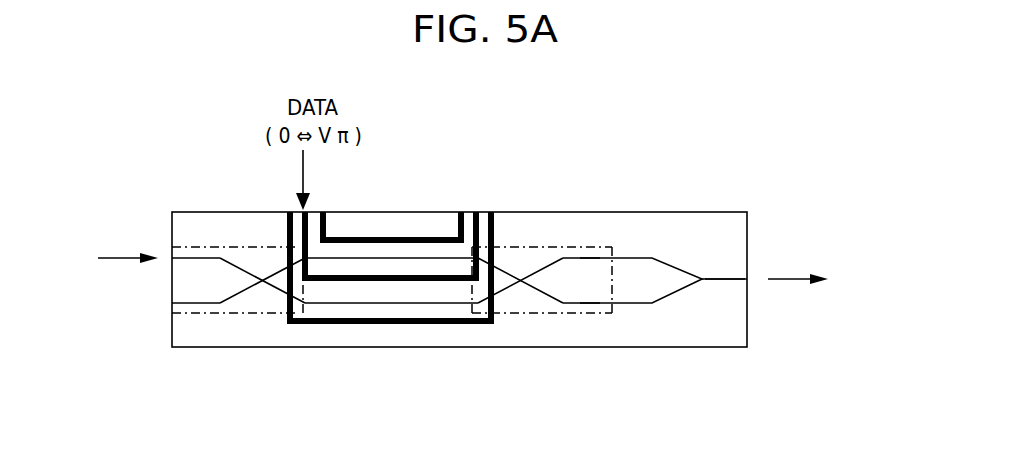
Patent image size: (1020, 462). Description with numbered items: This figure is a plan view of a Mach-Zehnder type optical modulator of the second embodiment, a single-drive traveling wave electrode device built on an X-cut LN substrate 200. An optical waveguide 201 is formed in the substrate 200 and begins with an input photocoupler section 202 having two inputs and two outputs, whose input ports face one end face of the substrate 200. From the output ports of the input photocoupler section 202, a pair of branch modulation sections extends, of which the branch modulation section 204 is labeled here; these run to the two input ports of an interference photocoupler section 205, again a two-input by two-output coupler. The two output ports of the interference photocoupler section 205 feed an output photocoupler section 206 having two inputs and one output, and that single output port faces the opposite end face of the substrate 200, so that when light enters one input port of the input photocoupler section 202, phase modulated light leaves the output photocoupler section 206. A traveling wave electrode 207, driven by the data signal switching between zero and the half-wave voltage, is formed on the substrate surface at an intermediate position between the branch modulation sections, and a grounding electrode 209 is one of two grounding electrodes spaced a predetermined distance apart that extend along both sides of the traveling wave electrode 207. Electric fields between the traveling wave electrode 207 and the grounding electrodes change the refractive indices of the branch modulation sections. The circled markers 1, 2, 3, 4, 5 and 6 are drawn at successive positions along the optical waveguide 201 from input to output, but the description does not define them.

The LN substrate 200 is at (540, 211).
The optical waveguide 201 is at (688, 312).
The input photocoupler section 202 is at (215, 314).
The branch modulation section 204 is at (368, 304).
The interference photocoupler section 205 is at (523, 314).
The output photocoupler section 206 is at (722, 278).
The traveling wave electrode 207 is at (332, 284).
The grounding electrode 209 is at (435, 324).
The optical position 1 (input) 1 is at (238, 280).
The optical position 2 is at (483, 224).
The optical position 3 is at (483, 304).
The optical position 4 is at (585, 257).
The optical position 5 is at (586, 304).
The optical position 6 (output) 6 is at (725, 294).